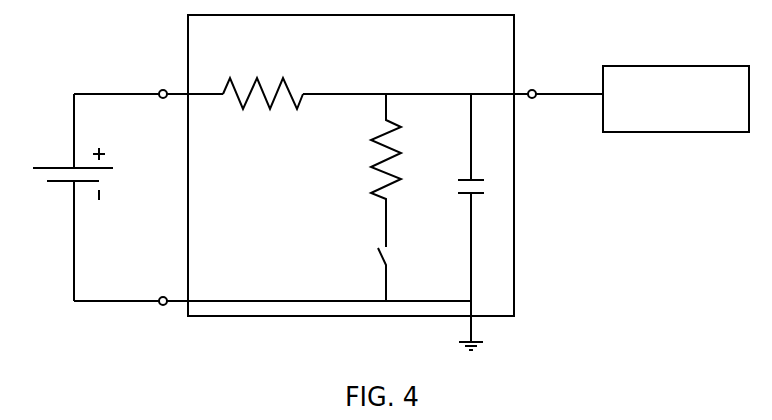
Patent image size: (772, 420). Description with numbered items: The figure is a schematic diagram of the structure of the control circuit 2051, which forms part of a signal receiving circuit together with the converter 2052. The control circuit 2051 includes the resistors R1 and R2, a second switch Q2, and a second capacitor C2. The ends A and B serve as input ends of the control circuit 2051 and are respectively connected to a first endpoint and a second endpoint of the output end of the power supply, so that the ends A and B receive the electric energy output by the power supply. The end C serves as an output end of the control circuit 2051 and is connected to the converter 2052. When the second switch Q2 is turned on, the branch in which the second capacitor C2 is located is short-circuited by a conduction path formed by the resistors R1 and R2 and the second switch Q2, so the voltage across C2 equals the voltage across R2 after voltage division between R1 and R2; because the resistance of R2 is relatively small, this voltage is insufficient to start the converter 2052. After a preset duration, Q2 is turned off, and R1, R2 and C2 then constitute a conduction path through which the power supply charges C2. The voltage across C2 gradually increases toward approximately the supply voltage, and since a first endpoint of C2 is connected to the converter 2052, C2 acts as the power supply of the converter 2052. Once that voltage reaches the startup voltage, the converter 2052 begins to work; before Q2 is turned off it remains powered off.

The control circuit 2051 is at (351, 165).
The converter 2052 is at (676, 99).
The resistor R1 is at (263, 111).
The resistor R2 is at (366, 170).
The second capacitor C2 is at (454, 222).
The second switch Q2 is at (361, 271).
The input end A is at (152, 81).
The input end B is at (155, 316).
The output end C is at (539, 79).